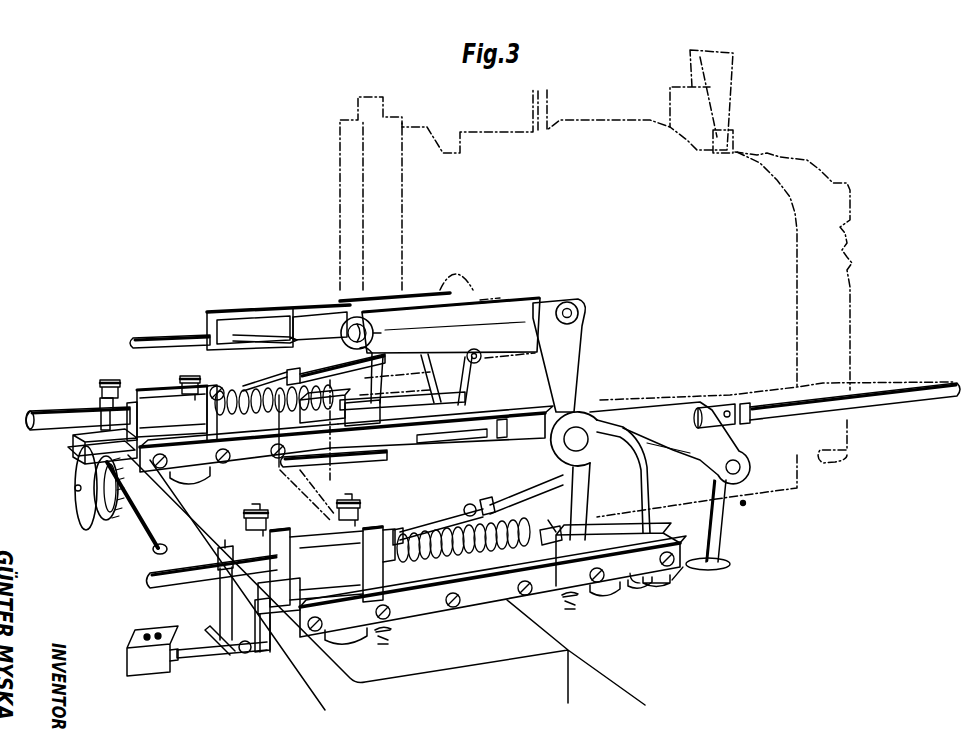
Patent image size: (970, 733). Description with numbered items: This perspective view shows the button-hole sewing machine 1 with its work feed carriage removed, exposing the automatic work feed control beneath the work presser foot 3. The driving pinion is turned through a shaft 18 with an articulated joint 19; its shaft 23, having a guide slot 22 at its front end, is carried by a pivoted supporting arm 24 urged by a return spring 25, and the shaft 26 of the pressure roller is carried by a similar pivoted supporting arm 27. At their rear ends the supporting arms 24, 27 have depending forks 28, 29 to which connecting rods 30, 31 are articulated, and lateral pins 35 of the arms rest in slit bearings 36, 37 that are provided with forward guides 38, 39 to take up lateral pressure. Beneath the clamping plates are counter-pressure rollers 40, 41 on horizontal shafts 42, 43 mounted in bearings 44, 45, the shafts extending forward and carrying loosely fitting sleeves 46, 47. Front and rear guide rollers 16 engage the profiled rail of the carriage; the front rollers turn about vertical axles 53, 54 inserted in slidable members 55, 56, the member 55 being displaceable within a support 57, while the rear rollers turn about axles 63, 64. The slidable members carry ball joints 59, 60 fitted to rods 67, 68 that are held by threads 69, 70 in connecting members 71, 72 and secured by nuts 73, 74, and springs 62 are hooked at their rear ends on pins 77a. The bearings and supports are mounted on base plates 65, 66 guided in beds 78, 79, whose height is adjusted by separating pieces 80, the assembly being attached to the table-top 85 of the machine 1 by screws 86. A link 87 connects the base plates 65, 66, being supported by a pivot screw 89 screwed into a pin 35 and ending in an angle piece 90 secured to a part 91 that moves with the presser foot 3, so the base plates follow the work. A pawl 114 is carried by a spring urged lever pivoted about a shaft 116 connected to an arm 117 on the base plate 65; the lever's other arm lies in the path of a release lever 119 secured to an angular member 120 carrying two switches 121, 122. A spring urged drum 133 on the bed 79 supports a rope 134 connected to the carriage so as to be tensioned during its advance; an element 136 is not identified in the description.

The button-hole sewing machine 1 is at (583, 153).
The work presser foot 3 is at (490, 300).
The guide rollers 16 is at (102, 385).
The shaft 18 is at (905, 400).
The articulated joint 19 is at (722, 407).
The guide slot 22 is at (318, 466).
The shaft of the driving pinion 23 is at (278, 470).
The supporting arm 24 is at (490, 432).
The return spring 25 is at (655, 583).
The shaft of the pressure roller 26 is at (175, 339).
The supporting arm 27 is at (270, 318).
The depending fork 28 is at (723, 453).
The depending fork 29 is at (482, 356).
The connecting rod 30 is at (720, 532).
The connecting rod 31 is at (474, 388).
The lateral pins 35 is at (580, 436).
The slit bearing 36 is at (628, 478).
The slit bearing 37 is at (430, 380).
The forward guide 38 is at (520, 457).
The forward guide 39 is at (318, 322).
The counter-pressure roller 40 is at (385, 584).
The counter-pressure roller 41 is at (143, 393).
The horizontal shaft 42 is at (150, 582).
The horizontal shaft 43 is at (34, 424).
The bearing 44 is at (373, 581).
The bearing 45 is at (130, 437).
The loosely fitting sleeve 46 is at (160, 553).
The loosely fitting sleeve 47 is at (60, 416).
The vertical axle 53 is at (256, 513).
The vertical axle 54 is at (110, 378).
The slidable member 55 is at (247, 550).
The slidable member 56 is at (100, 403).
The support 57 is at (310, 528).
The ball joint 59 is at (400, 529).
The ball joint 60 is at (217, 386).
The spring 62 is at (528, 546).
The axle 63 is at (344, 500).
The axle 64 is at (190, 376).
The base plate 65 is at (279, 628).
The base plate 66 is at (112, 466).
The rod 67 is at (432, 520).
The rod 68 is at (243, 392).
The thread 69 is at (472, 505).
The thread 70 is at (282, 388).
The connecting member 71 is at (515, 494).
The connecting member 72 is at (325, 378).
The nut 73 is at (489, 502).
The nut 74 is at (292, 372).
The pins 77a is at (333, 411).
The bed 78 is at (422, 604).
The bed 79 is at (243, 458).
The separating pieces 80 is at (185, 478).
The table-top 85 is at (538, 685).
The screws 86 is at (475, 628).
The link 87 is at (503, 340).
The pivot screw 89 is at (343, 312).
The angle piece 90 is at (550, 307).
The part moving with the presser foot 91 is at (577, 308).
The pawl 114 is at (233, 660).
The shaft 116 is at (247, 654).
The arm 117 is at (266, 655).
The release lever 119 is at (216, 636).
The angular member 120 is at (221, 626).
The switch 121 is at (143, 663).
The switch 122 is at (161, 657).
The spring urged drum 133 is at (90, 510).
The rope 134 is at (138, 518).
The ring 136 is at (745, 404).